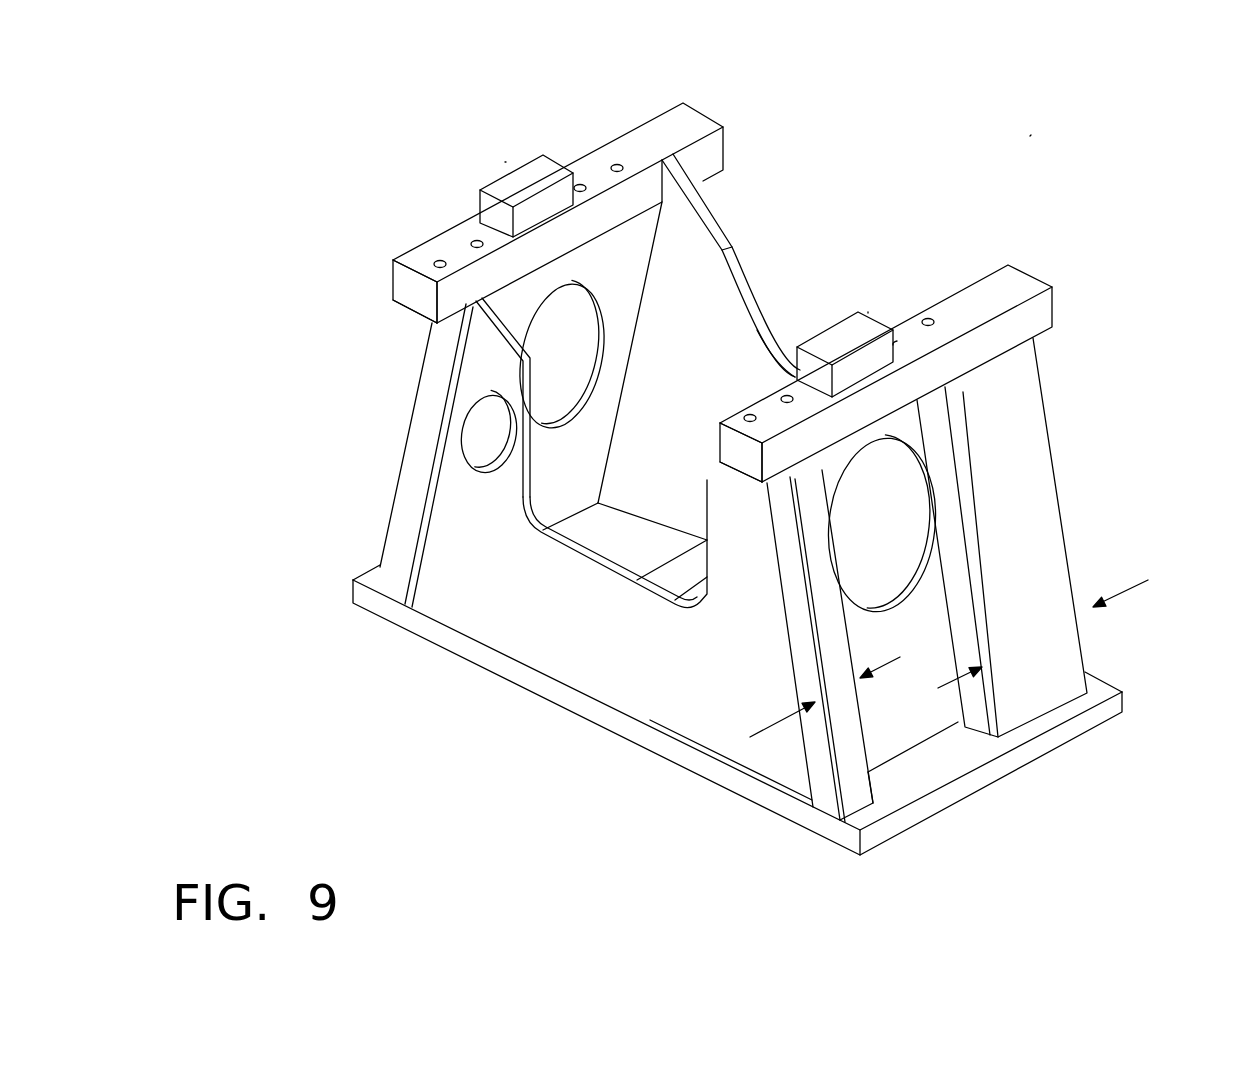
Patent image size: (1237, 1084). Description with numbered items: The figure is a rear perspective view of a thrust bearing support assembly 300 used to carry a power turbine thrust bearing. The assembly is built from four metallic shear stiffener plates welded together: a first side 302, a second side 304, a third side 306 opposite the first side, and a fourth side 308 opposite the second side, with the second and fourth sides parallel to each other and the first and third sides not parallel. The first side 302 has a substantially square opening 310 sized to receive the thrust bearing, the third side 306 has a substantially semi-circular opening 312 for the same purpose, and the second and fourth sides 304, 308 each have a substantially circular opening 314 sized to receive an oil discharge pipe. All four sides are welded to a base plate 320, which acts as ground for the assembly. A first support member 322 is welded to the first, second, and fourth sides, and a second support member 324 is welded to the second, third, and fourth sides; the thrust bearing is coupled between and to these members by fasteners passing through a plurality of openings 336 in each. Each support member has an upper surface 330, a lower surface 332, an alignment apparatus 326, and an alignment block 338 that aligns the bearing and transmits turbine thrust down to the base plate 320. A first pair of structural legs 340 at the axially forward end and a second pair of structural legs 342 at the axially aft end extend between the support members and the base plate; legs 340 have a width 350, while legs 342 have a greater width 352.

The thrust bearing support assembly 300 is at (1040, 128).
The first side 302 is at (492, 603).
The second side 304 is at (905, 727).
The third side 306 is at (696, 258).
The fourth side 308 is at (618, 277).
The opening 310 is at (580, 550).
The opening 312 is at (755, 325).
The opening 314 is at (560, 380).
The base plate 320 is at (907, 780).
The first support member 322 is at (1025, 283).
The second support member 324 is at (700, 120).
The alignment apparatus 326 is at (498, 154).
The upper surface 330 is at (425, 256).
The lower surface 332 is at (410, 328).
The openings 336 is at (621, 158).
The alignment block 338 is at (480, 188).
The first pair of structural legs 340 is at (400, 468).
The second pair of structural legs 342 is at (1035, 550).
The width 350 is at (765, 720).
The width 352 is at (1128, 605).